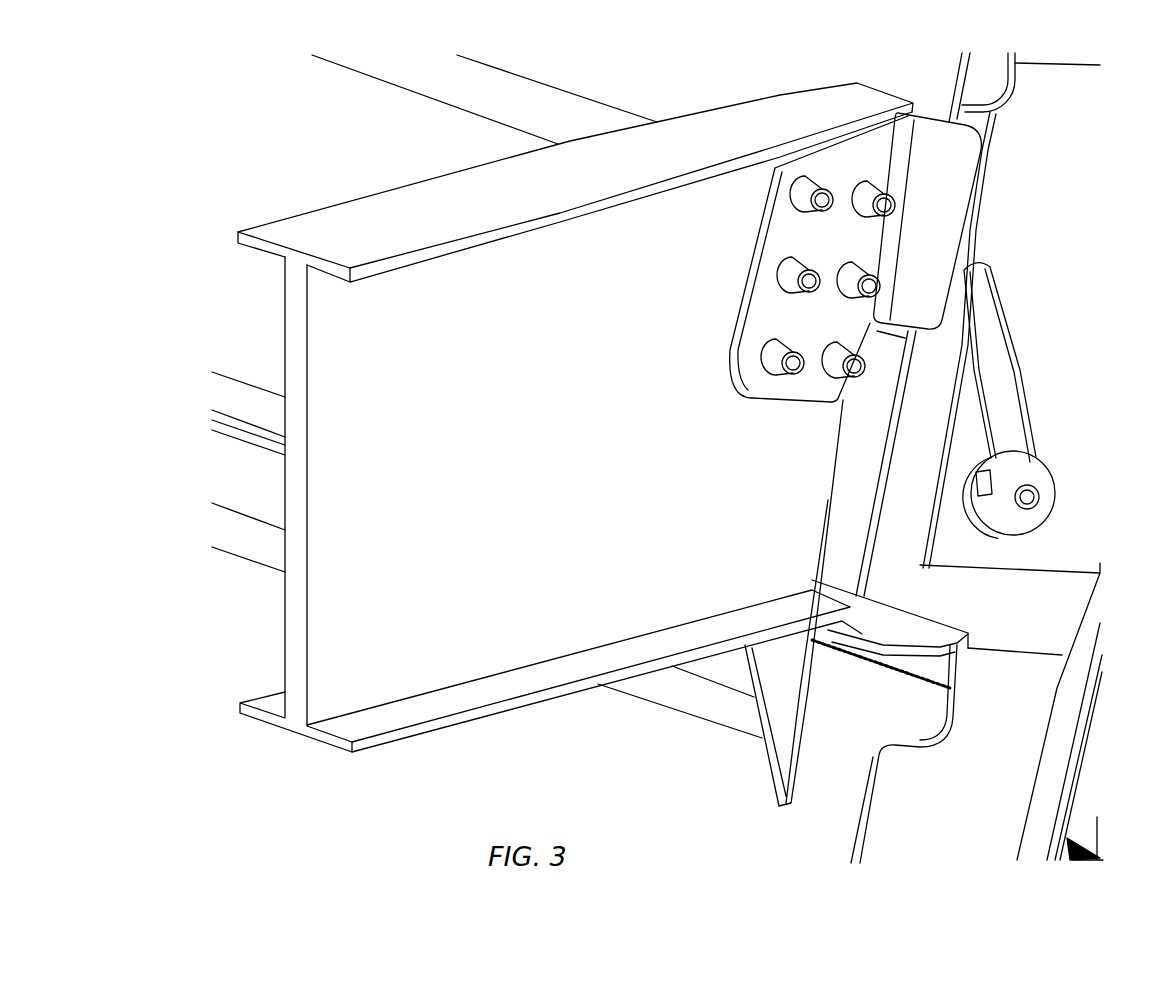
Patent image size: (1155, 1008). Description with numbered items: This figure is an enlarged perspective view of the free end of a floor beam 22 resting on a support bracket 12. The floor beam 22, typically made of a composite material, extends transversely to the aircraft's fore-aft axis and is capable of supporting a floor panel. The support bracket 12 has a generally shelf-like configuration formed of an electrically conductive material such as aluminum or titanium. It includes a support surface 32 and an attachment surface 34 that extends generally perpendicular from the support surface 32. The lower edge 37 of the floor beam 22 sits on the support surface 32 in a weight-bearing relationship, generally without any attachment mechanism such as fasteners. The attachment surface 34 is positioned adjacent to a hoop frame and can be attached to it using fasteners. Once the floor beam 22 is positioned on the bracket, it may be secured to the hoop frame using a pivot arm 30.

The support bracket 12 is at (967, 458).
The floor beam 22 is at (551, 448).
The pivot arm 30 is at (1013, 345).
The support surface 32 is at (903, 632).
The attachment surface 34 is at (775, 812).
The lower edge 37 is at (367, 723).